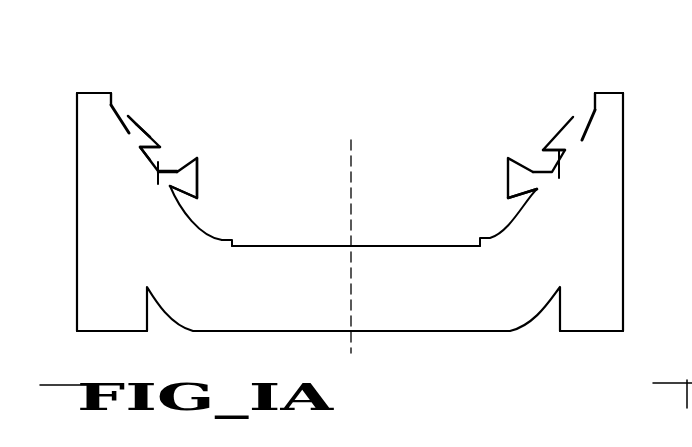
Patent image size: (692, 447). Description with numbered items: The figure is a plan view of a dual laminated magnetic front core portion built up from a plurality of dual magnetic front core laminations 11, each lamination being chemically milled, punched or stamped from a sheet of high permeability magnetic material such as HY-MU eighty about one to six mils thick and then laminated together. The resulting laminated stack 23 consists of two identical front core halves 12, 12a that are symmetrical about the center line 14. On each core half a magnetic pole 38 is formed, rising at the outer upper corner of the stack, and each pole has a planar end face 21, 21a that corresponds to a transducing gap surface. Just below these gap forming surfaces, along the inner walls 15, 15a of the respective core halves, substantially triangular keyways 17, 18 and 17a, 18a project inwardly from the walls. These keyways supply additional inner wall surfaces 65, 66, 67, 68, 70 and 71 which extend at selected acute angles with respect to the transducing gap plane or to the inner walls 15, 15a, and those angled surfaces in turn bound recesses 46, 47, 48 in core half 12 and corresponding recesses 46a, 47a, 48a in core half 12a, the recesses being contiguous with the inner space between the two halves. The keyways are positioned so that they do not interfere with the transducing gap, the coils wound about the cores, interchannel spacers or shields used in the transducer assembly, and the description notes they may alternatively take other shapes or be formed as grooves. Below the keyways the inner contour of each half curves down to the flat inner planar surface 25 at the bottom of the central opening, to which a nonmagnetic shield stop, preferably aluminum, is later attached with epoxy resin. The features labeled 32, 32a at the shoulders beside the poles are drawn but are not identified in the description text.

The laminated stack 23 is at (185, 68).
The magnetic pole 38 is at (78, 105).
The planar end face 21 is at (97, 92).
The planar end face 21a is at (613, 93).
The shoulder 32 is at (112, 95).
The shoulder 32a is at (595, 100).
The inner wall 15 is at (114, 120).
The inner wall 15a is at (584, 124).
The keyway 17 is at (146, 135).
The keyway 17a is at (562, 132).
The additional inner wall surface 65 is at (127, 117).
The additional inner wall surface 66 is at (138, 118).
The recess 46 is at (128, 131).
The recess 46a is at (580, 141).
The additional inner wall surface 67 is at (142, 153).
The recess 47 is at (158, 184).
The recess 47a is at (560, 163).
The additional inner wall surface 68 is at (173, 168).
The keyway 18 is at (192, 181).
The keyway 18a is at (508, 174).
The additional inner wall surface 70 is at (198, 161).
The recess 48 is at (180, 188).
The recess 48a is at (531, 191).
The additional inner wall surface 71 is at (168, 193).
The inner planar surface 25 is at (383, 245).
The dual magnetic front core lamination 11 is at (289, 244).
The front core half 12 is at (262, 286).
The front core half 12a is at (423, 288).
The line of symmetry 14 is at (352, 150).